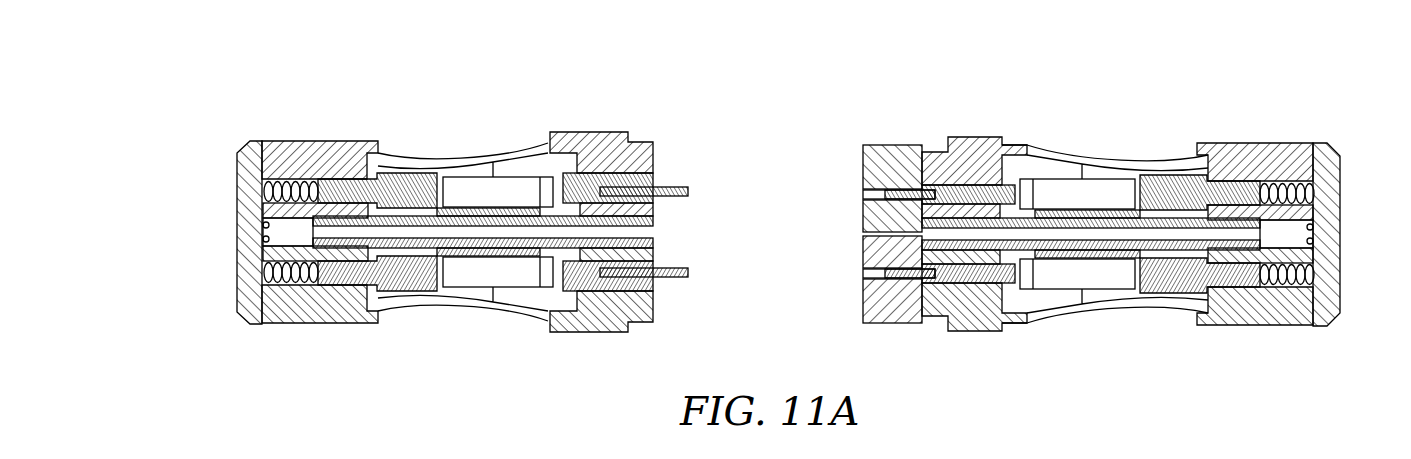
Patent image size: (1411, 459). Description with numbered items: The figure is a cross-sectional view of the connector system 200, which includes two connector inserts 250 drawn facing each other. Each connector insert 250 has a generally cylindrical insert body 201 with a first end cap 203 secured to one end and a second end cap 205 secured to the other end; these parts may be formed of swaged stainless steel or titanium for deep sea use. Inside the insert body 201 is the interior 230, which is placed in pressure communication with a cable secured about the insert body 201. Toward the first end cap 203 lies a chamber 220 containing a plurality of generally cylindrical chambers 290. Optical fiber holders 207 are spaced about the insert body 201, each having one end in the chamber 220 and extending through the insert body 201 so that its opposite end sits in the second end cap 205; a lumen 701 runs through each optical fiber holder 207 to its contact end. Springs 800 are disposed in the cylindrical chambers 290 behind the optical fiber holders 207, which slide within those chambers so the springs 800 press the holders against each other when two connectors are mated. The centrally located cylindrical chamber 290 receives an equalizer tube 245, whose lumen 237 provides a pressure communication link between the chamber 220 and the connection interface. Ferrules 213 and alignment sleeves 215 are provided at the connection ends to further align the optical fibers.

The connector system 200 is at (262, 74).
The insert body 201 is at (335, 141).
The first end cap 203 is at (236, 185).
The second end cap 205 is at (603, 133).
The optical fiber holder 207 is at (412, 305).
The ferrule 213 is at (678, 181).
The alignment sleeve 215 is at (903, 178).
The chamber 220 is at (253, 263).
The interior 230 is at (476, 176).
The lumen 237 is at (503, 230).
The equalizer tube 245 is at (505, 215).
The connector insert 250 is at (491, 349).
The cylindrical chamber 290 is at (310, 165).
The lumen 701 is at (600, 180).
The spring 800 is at (287, 296).